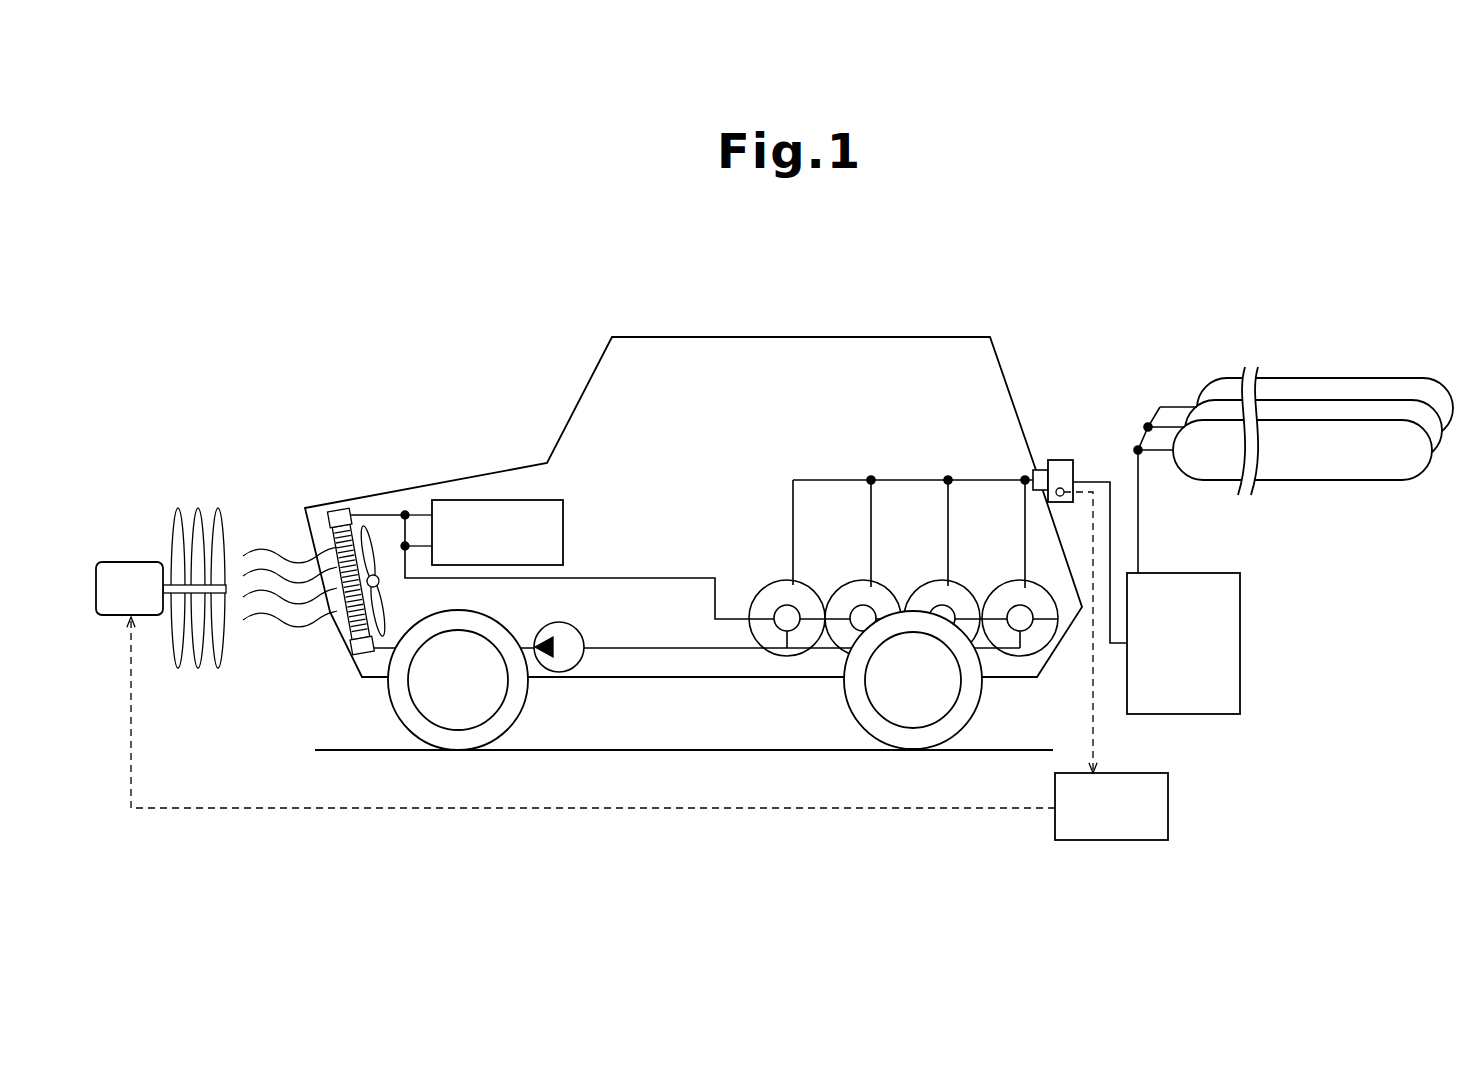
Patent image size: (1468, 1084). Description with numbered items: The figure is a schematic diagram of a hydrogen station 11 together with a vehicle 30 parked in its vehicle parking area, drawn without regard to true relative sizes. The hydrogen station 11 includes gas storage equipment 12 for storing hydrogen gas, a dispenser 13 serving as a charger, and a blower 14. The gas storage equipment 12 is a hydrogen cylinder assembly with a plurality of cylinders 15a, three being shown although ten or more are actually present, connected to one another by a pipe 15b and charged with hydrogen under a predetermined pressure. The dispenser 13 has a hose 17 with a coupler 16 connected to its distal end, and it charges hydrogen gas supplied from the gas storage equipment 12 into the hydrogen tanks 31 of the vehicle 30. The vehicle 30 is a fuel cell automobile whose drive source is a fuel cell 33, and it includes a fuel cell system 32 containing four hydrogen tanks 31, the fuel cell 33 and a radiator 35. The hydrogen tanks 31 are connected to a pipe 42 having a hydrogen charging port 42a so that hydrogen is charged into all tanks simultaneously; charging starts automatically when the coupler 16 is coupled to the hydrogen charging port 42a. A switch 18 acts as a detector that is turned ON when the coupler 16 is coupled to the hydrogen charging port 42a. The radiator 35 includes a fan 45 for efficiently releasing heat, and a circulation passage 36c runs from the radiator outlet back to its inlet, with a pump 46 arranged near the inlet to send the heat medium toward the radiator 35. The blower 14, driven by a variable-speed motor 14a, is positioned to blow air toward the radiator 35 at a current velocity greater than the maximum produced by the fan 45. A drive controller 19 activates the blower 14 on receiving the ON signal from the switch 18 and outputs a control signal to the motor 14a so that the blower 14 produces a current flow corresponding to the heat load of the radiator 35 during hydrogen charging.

The hydrogen station 11 is at (1233, 300).
The gas storage equipment 12 is at (1313, 456).
The dispenser 13 is at (1240, 638).
The blower 14 is at (178, 482).
The motor 14a is at (130, 575).
The cylinders 15a is at (1365, 408).
The pipe 15b is at (1168, 405).
The coupler 16 is at (1058, 460).
The hose 17 is at (1114, 495).
The switch 18 is at (1062, 488).
The drive controller 19 is at (1168, 808).
The vehicle 30 is at (583, 385).
The hydrogen tanks 31 is at (813, 597).
The fuel cell system 32 is at (716, 484).
The fuel cell 33 is at (563, 531).
The radiator 35 is at (337, 507).
The circulation passage 36c is at (670, 647).
The pipe 42 is at (908, 478).
The hydrogen charging port 42a is at (1033, 474).
The fan 45 is at (378, 530).
The pump 46 is at (607, 618).